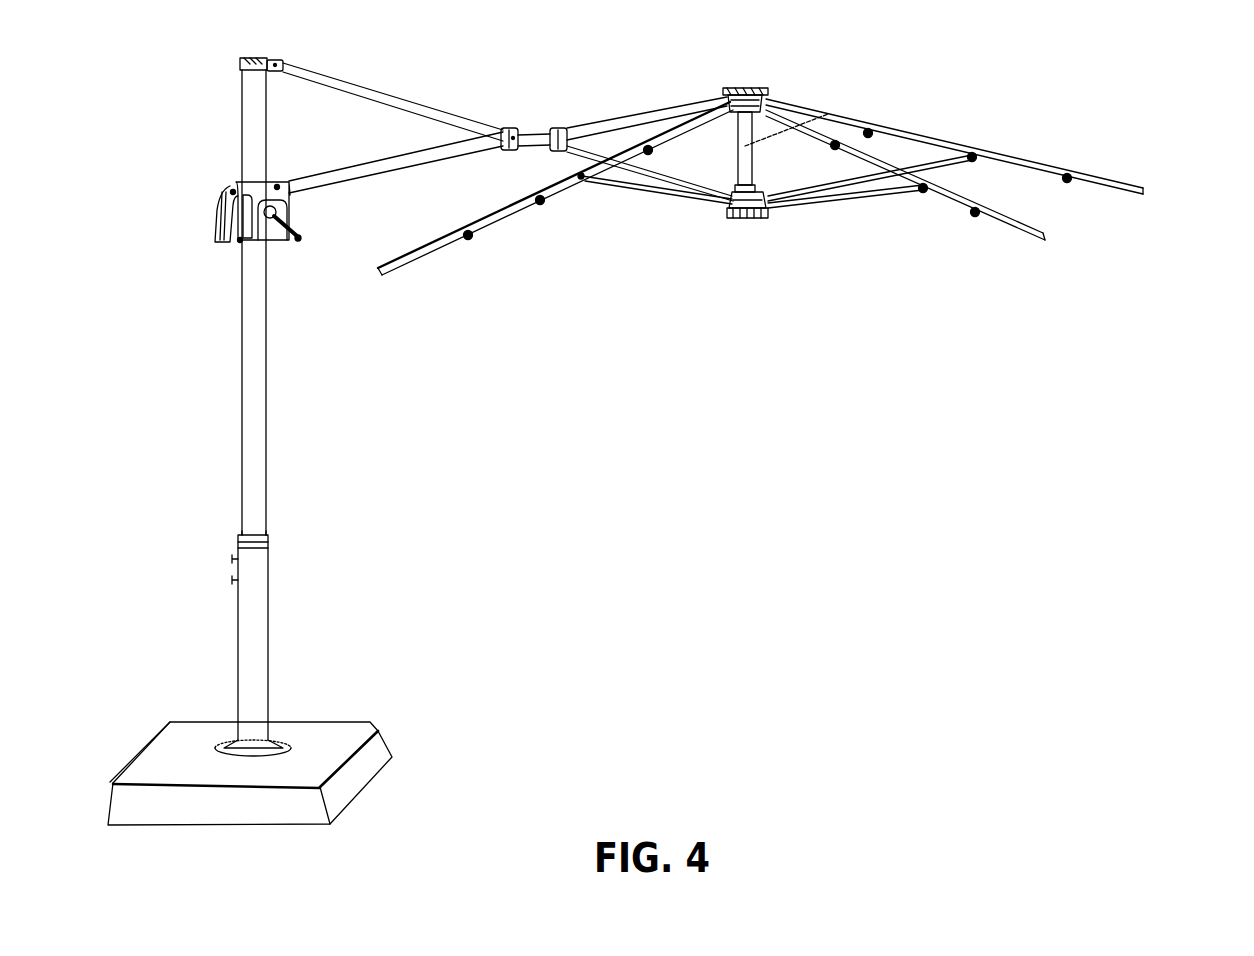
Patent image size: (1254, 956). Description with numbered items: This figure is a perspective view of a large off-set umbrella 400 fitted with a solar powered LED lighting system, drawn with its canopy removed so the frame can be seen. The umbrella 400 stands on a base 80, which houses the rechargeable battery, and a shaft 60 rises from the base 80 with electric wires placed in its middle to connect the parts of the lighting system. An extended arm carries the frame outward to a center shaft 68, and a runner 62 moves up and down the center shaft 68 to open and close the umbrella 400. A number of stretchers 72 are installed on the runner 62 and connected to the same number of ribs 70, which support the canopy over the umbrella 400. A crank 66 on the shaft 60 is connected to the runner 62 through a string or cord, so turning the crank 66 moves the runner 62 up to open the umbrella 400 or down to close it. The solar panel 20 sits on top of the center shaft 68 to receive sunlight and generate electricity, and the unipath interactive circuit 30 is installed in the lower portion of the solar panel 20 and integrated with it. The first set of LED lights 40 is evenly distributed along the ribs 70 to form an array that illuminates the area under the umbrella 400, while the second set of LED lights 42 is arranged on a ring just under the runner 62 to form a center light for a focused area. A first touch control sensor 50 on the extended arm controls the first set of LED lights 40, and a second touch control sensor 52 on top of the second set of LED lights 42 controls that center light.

The large off-set umbrella 400 is at (156, 117).
The solar panel 20 is at (758, 88).
The unipath interactive circuit 30 is at (724, 94).
The first set of LED lights 40 is at (650, 154).
The second set of LED lights 42 is at (765, 219).
The first touch control sensor 50 is at (426, 152).
The second touch control sensor 52 is at (728, 207).
The shaft 60 is at (262, 339).
The runner 62 is at (762, 194).
The crank 66 is at (270, 240).
The center shaft 68 is at (822, 124).
The ribs 70 is at (396, 277).
The stretchers 72 is at (860, 172).
The base 80 is at (318, 721).